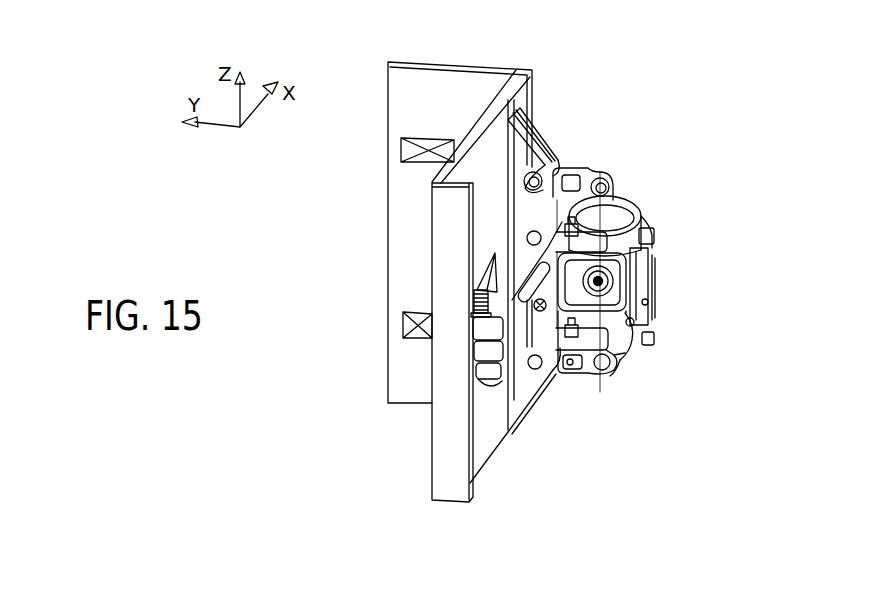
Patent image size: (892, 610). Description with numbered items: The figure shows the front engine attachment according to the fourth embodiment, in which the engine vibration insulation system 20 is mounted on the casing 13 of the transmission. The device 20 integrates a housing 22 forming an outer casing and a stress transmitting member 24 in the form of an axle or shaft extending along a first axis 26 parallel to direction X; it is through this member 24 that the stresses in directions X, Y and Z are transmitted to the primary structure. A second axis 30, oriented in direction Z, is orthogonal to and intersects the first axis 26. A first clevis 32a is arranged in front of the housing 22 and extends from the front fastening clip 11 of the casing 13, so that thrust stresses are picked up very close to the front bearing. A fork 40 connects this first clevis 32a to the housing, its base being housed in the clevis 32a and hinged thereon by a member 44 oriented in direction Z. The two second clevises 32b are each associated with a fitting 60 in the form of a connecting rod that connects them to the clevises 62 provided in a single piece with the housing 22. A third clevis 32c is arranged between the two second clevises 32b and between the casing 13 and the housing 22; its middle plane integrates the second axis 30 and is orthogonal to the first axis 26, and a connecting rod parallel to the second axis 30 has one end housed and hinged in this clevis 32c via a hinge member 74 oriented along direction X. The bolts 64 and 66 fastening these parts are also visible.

The front fastening clip 11 is at (451, 502).
The casing 13 is at (492, 138).
The engine vibration insulation system 20 is at (657, 290).
The housing 22 is at (622, 332).
The stress transmitting member 24 is at (645, 233).
The first axis 26 is at (651, 212).
The second axis 30 is at (608, 376).
The first clevis 32a is at (493, 333).
The second clevises 32b is at (514, 128).
The third clevis 32c is at (520, 222).
The fork 40 is at (473, 290).
The hinge member 44 is at (472, 307).
The fitting 60 is at (580, 168).
The clevises of the housing 62 is at (612, 168).
The bolt hole 64 is at (603, 172).
The fastening bolt 66 is at (536, 172).
The hinge member 74 is at (526, 238).